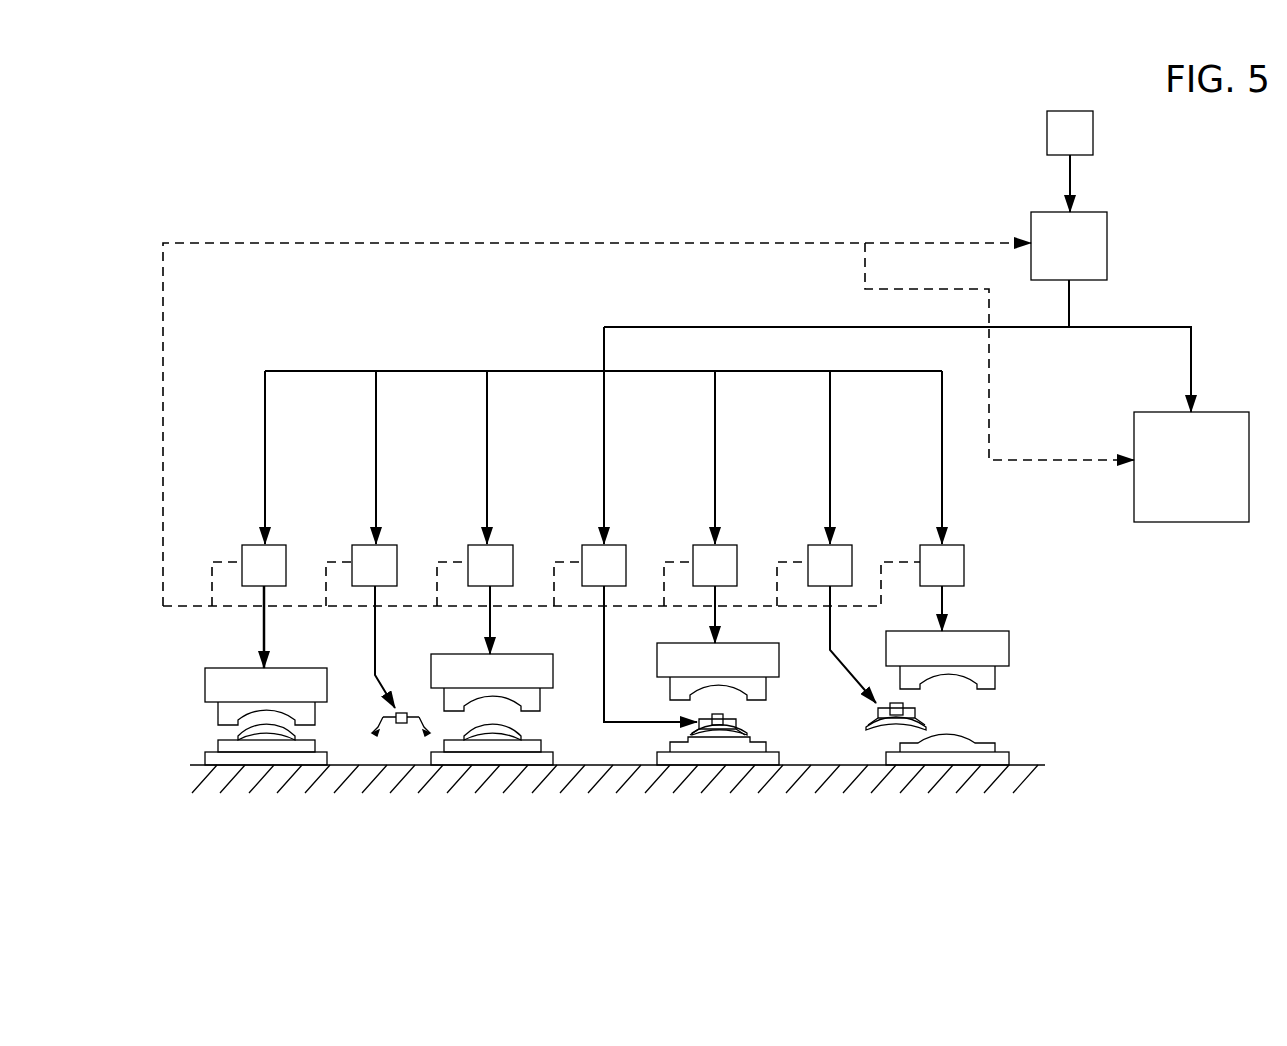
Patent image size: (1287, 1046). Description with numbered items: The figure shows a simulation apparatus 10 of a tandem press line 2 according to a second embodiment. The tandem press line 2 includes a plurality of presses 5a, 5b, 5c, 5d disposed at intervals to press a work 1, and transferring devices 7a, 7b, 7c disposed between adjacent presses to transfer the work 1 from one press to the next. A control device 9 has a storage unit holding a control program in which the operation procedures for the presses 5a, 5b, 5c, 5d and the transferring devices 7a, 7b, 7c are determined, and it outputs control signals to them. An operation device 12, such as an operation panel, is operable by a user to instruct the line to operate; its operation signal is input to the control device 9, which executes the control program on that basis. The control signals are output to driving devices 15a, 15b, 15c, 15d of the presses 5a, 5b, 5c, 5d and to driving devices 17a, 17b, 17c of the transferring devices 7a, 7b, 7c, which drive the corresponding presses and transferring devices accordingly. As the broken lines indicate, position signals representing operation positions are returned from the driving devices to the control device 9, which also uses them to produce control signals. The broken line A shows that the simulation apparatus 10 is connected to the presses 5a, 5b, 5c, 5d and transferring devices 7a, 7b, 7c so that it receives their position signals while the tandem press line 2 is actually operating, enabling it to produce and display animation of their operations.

The work 1 is at (263, 732).
The tandem press line 2 is at (477, 181).
The press 5a is at (217, 685).
The press 5b is at (543, 673).
The press 5c is at (765, 660).
The press 5d is at (998, 660).
The transferring device 7a is at (401, 713).
The transferring device 7b is at (723, 716).
The transferring device 7c is at (893, 703).
The control device 9 is at (1061, 261).
The simulation apparatus 10 is at (1177, 482).
The operation device 12 is at (1057, 147).
The driving device 15a is at (246, 580).
The driving device 15b is at (472, 580).
The driving device 15c is at (697, 580).
The driving device 15d is at (924, 580).
The driving device 17a is at (357, 580).
The driving device 17b is at (586, 580).
The driving device 17c is at (812, 580).
The broken line A is at (1015, 462).